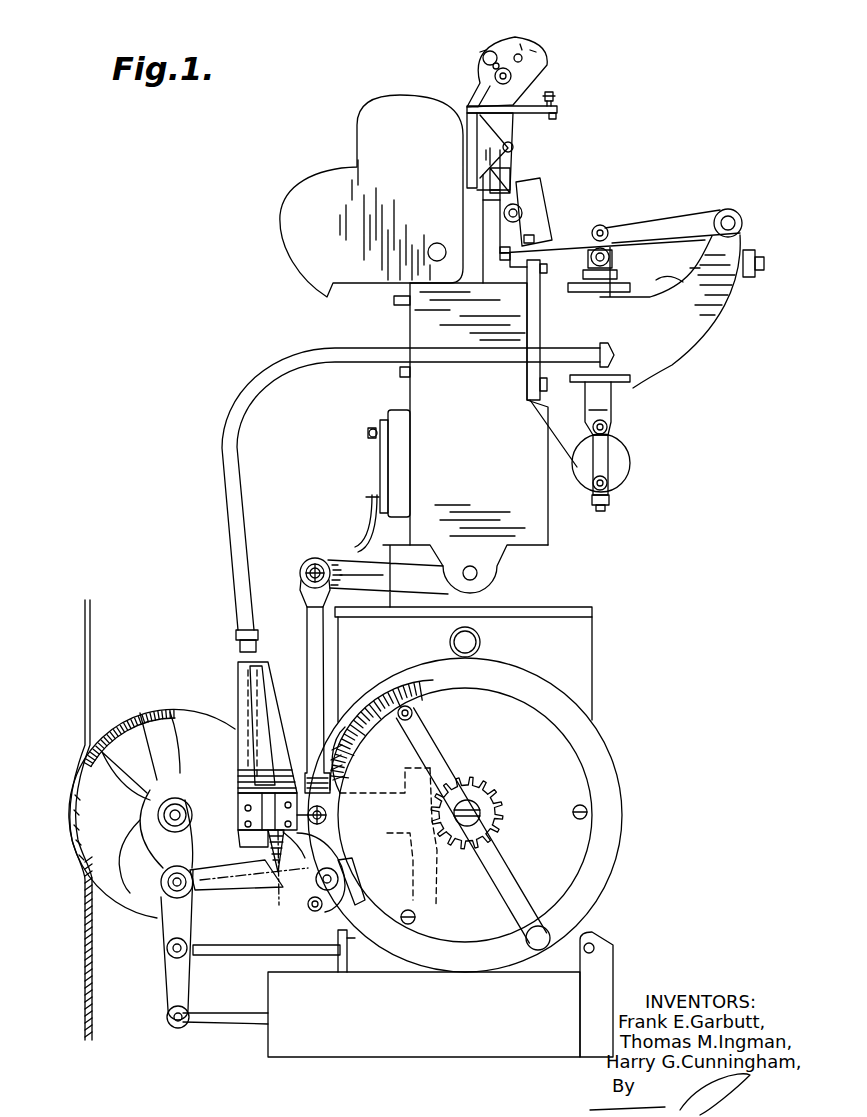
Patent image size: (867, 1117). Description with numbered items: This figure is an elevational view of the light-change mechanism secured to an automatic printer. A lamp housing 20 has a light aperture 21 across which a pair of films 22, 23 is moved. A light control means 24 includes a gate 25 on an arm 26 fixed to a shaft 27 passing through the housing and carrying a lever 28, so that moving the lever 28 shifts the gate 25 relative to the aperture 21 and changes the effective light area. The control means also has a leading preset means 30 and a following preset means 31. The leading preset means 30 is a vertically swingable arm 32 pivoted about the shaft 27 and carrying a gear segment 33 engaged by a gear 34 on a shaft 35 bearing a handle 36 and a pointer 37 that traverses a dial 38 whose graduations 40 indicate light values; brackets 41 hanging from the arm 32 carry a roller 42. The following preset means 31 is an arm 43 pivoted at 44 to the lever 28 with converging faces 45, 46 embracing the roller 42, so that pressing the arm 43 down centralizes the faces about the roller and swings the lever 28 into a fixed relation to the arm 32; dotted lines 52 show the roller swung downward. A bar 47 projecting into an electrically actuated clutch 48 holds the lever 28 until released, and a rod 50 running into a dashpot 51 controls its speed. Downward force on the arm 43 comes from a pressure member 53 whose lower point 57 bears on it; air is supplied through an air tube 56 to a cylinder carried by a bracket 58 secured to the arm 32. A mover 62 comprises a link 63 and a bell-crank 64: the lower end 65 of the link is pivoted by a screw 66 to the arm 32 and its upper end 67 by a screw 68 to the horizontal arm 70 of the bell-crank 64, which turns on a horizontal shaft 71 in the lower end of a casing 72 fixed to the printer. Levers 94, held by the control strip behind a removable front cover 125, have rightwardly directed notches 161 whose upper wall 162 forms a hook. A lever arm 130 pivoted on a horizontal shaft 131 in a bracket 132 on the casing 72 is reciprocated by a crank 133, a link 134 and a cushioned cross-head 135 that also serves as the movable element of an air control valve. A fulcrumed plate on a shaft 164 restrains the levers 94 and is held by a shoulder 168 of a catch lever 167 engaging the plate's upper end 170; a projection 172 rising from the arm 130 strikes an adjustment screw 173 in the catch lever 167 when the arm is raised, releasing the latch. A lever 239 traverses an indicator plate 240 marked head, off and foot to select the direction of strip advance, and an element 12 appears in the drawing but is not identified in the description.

The nozzle / cone 12 is at (247, 638).
The lamp housing 20 is at (200, 727).
The light aperture 21 is at (70, 800).
The film 22 is at (88, 695).
The film 23 is at (83, 695).
The light control means 24 is at (140, 751).
The gate 25 is at (90, 780).
The arm 26 is at (117, 752).
The shaft 27 is at (183, 837).
The lever 28 is at (173, 918).
The leading preset means 30 is at (343, 793).
The following preset means 31 is at (353, 880).
The vertically swingable arm 32 is at (330, 816).
The gear segment 33 is at (450, 905).
The gear 34 is at (480, 790).
The shaft 35 is at (500, 812).
The lever or handle 36 is at (514, 893).
The pointer 37 is at (413, 745).
The scale or dial 38 is at (377, 690).
The graduations 40 is at (372, 695).
The brackets 41 is at (355, 860).
The roller 42 is at (345, 975).
The arm 43 is at (233, 882).
The pivot 44 is at (180, 865).
The converging face 45 is at (322, 905).
The converging face 46 is at (310, 900).
The bar 47 is at (295, 955).
The clutch mechanism 48 is at (380, 953).
The rod 50 is at (222, 1019).
The dashpot 51 is at (410, 1037).
The dotted lines 52 is at (316, 910).
The pressure member 53 is at (268, 853).
The air tube 56 is at (316, 356).
The point 57 is at (330, 866).
The bracket 58 is at (252, 745).
The mover 62 is at (343, 553).
The link 63 is at (318, 637).
The bell-crank 64 is at (420, 572).
The lower end 65 is at (313, 773).
The screw 66 is at (245, 808).
The upper end 67 is at (302, 588).
The screw 68 is at (313, 560).
The horizontal arm 70 is at (370, 577).
The horizontal shaft 71 is at (478, 573).
The casing 72 is at (523, 493).
The lever 94 is at (490, 220).
The front cover 125 is at (368, 148).
The lever arm 130 is at (655, 228).
The horizontal shaft 131 is at (735, 215).
The bracket 132 is at (700, 318).
The crank 133 is at (608, 483).
The link 134 is at (608, 445).
The cushioned cross-head 135 is at (607, 395).
The notches 161 is at (485, 197).
The upper wall 162 is at (512, 177).
The horizontal shaft 164 is at (513, 148).
The catch lever 167 is at (556, 98).
The shoulder 168 is at (528, 104).
The upper end 170 is at (512, 128).
The bracket or projection 172 is at (534, 204).
The adjustment screw 173 is at (558, 116).
The lever 239 is at (522, 55).
The indicator plate 240 is at (492, 66).